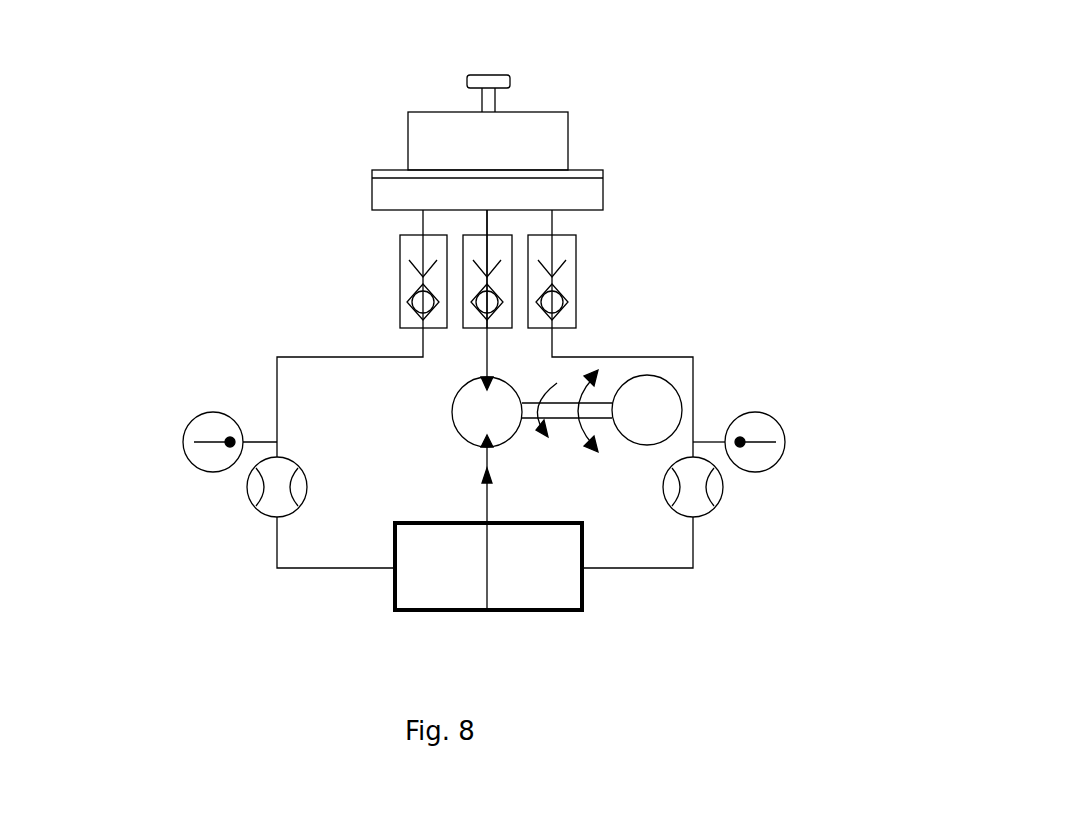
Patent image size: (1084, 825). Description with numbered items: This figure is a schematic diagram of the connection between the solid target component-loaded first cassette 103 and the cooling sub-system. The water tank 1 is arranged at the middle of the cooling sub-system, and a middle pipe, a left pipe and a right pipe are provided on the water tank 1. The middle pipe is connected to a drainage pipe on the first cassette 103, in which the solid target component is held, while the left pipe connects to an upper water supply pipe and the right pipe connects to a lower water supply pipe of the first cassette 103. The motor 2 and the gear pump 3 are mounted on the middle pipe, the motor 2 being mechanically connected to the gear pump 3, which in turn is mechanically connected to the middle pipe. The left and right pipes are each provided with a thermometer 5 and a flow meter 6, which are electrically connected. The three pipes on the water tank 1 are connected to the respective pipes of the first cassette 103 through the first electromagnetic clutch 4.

The first cassette 103 is at (568, 137).
The first electromagnetic clutch 4 is at (584, 243).
The gear pump 3 is at (612, 330).
The motor 2 is at (692, 351).
The thermometer 5 is at (164, 459).
The flow meter 6 is at (196, 512).
The water tank 1 is at (521, 603).